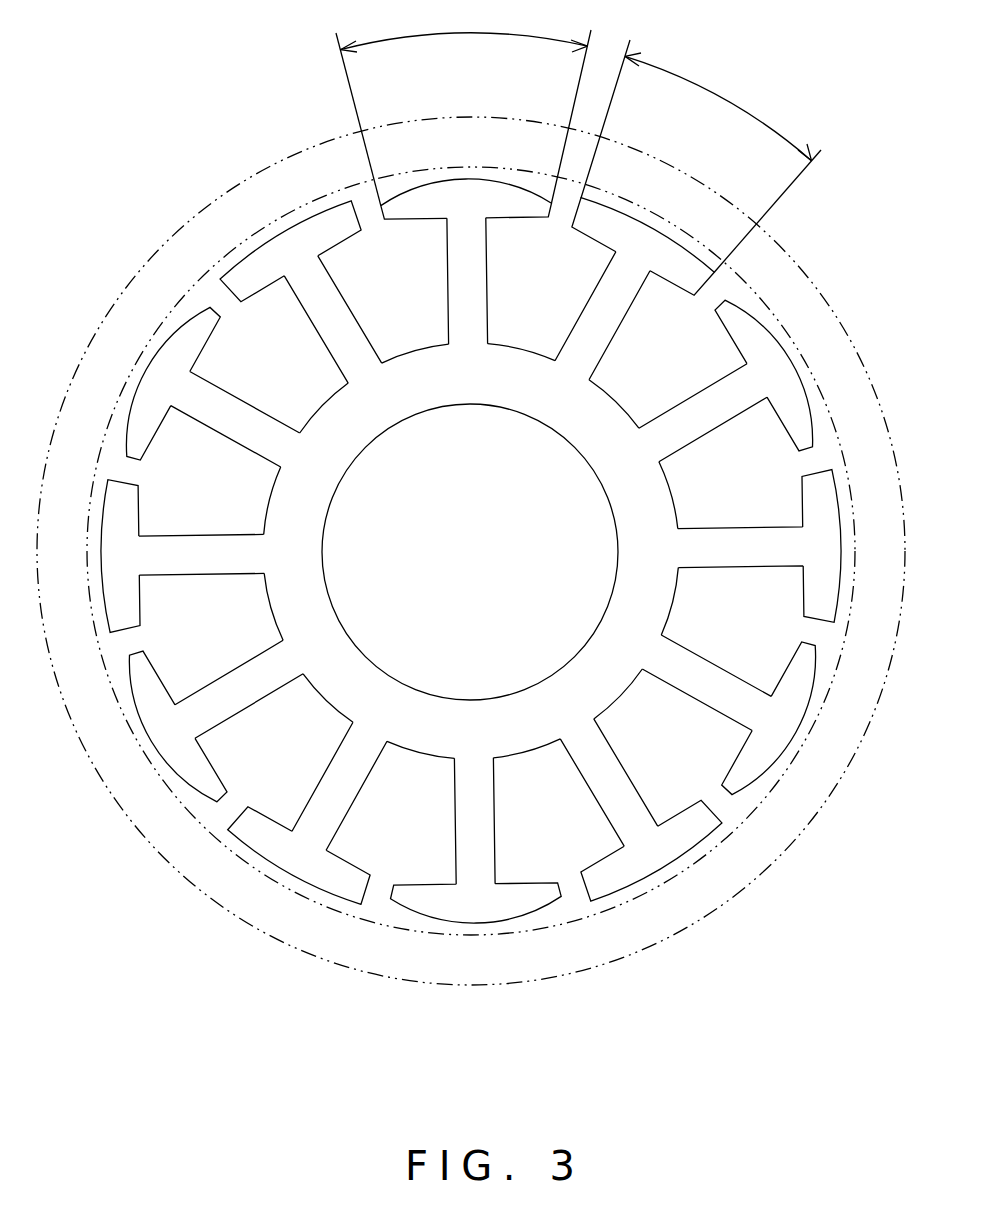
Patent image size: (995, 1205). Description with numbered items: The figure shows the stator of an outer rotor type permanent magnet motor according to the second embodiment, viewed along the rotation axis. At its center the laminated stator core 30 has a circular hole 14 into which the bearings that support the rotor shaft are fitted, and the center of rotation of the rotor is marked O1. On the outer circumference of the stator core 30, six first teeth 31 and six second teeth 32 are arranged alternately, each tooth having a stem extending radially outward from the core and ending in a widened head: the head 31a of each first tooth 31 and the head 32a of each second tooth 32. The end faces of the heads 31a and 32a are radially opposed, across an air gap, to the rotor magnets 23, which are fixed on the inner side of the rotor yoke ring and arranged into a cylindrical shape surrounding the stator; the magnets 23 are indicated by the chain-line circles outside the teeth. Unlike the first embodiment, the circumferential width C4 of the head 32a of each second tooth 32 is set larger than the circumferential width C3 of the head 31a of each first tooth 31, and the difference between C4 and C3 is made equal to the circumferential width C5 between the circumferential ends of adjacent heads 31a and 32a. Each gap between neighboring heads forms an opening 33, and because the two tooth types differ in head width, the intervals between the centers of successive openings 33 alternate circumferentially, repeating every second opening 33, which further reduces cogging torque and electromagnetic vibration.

The rotor magnets 23 is at (238, 185).
The circular hole 14 is at (326, 578).
The stator core 30 is at (318, 482).
The first tooth 31 is at (578, 335).
The head of first tooth 31a is at (676, 277).
The second tooth 32 is at (458, 312).
The head of second tooth 32a is at (418, 205).
The opening 33 is at (563, 210).
The circumferential width of first tooth head C3 is at (723, 162).
The circumferential width of second tooth head C4 is at (462, 103).
The circumferential width between adjacent tooth heads C5 is at (607, 50).
The center of rotation of the rotor O1 is at (471, 552).